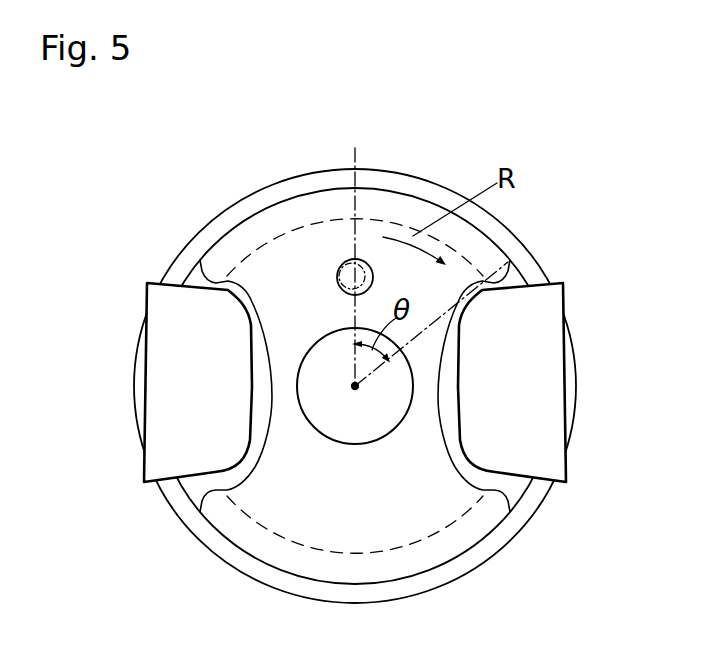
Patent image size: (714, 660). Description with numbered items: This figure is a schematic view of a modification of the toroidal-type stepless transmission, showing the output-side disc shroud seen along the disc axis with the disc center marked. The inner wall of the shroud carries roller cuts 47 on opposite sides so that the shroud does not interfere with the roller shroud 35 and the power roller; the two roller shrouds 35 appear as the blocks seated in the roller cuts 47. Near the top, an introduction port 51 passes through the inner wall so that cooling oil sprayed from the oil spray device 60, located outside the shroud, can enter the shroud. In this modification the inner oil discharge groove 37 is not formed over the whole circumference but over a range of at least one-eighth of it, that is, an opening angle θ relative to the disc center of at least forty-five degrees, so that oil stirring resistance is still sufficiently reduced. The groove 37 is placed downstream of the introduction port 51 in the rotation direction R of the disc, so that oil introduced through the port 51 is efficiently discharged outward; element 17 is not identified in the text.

The rotor hub 17 is at (474, 477).
The roller shroud 35 is at (170, 392).
The inner oil discharge groove 37 is at (497, 237).
The roller cuts 47 is at (441, 423).
The introduction ports 51 is at (336, 276).
The oil spray device 60 is at (362, 264).